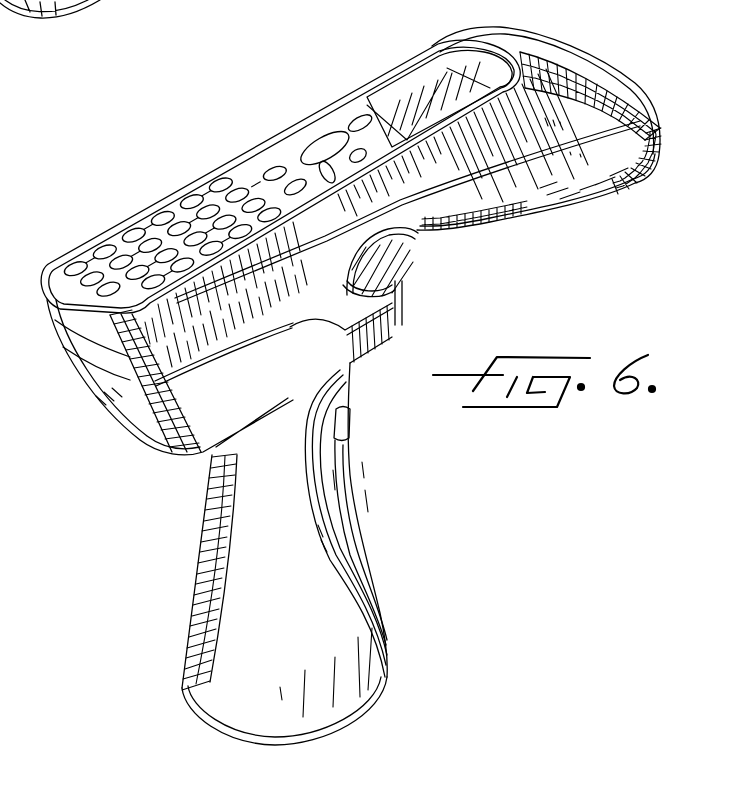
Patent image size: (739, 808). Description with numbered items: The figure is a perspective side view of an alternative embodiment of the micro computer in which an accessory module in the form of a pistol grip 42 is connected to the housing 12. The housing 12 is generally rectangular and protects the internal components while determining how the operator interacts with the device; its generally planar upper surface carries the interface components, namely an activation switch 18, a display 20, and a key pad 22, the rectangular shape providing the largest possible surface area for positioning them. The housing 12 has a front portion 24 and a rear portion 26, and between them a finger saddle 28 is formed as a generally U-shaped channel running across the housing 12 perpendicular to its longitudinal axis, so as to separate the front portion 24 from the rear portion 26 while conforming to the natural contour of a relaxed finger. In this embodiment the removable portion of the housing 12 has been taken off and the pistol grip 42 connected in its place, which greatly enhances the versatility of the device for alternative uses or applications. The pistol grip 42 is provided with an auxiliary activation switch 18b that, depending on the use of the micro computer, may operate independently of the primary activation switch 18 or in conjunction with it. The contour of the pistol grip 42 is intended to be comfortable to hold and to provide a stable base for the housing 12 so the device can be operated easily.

The housing 12 is at (396, 325).
The activation switch 18 is at (316, 147).
The auxiliary activation switch 18b is at (350, 411).
The display 20 is at (388, 93).
The key pad 22 is at (177, 190).
The front portion 24 is at (650, 168).
The rear portion 26 is at (107, 360).
The finger saddle 28 is at (398, 257).
The pistol grip 42 is at (228, 642).